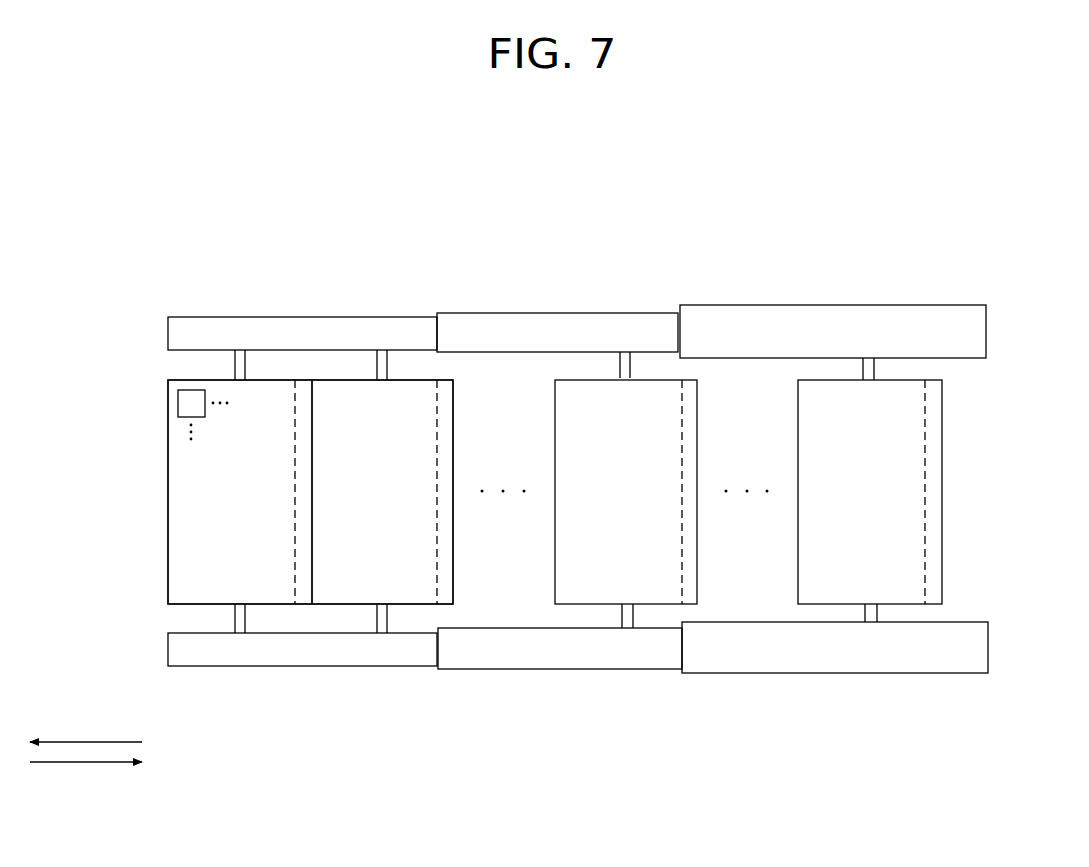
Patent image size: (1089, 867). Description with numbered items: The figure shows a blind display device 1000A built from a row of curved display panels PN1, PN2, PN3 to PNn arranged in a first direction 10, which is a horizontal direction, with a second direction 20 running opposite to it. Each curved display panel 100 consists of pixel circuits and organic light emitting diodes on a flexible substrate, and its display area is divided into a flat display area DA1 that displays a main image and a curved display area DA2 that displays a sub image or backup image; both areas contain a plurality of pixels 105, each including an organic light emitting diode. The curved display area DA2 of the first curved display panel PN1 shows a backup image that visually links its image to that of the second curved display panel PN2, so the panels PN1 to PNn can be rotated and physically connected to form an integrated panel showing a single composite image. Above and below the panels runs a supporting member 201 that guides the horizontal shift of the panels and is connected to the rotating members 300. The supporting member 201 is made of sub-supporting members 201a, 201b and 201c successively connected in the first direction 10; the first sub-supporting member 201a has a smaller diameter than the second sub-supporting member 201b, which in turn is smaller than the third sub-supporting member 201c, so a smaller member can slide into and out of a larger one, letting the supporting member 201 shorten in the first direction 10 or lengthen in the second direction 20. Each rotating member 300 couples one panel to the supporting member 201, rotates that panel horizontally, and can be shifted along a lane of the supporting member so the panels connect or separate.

The blind display device 1000A is at (577, 189).
The curved display panel 100 is at (168, 558).
The pixel 105 is at (178, 400).
The flat display area DA1 is at (190, 476).
The curved display area DA2 is at (303, 388).
The first curved display panel PN1 is at (270, 590).
The second curved display panel PN2 is at (410, 590).
The third curved display panel PN3 is at (658, 592).
The n-th curved display panel PNn is at (902, 590).
The supporting member 201 is at (619, 490).
The first sub-supporting member 201a is at (379, 322).
The second sub-supporting member 201b is at (570, 320).
The third sub-supporting member 201c is at (798, 312).
The rotating member 300 is at (233, 372).
The first direction 10 is at (85, 765).
The second direction 20 is at (85, 740).